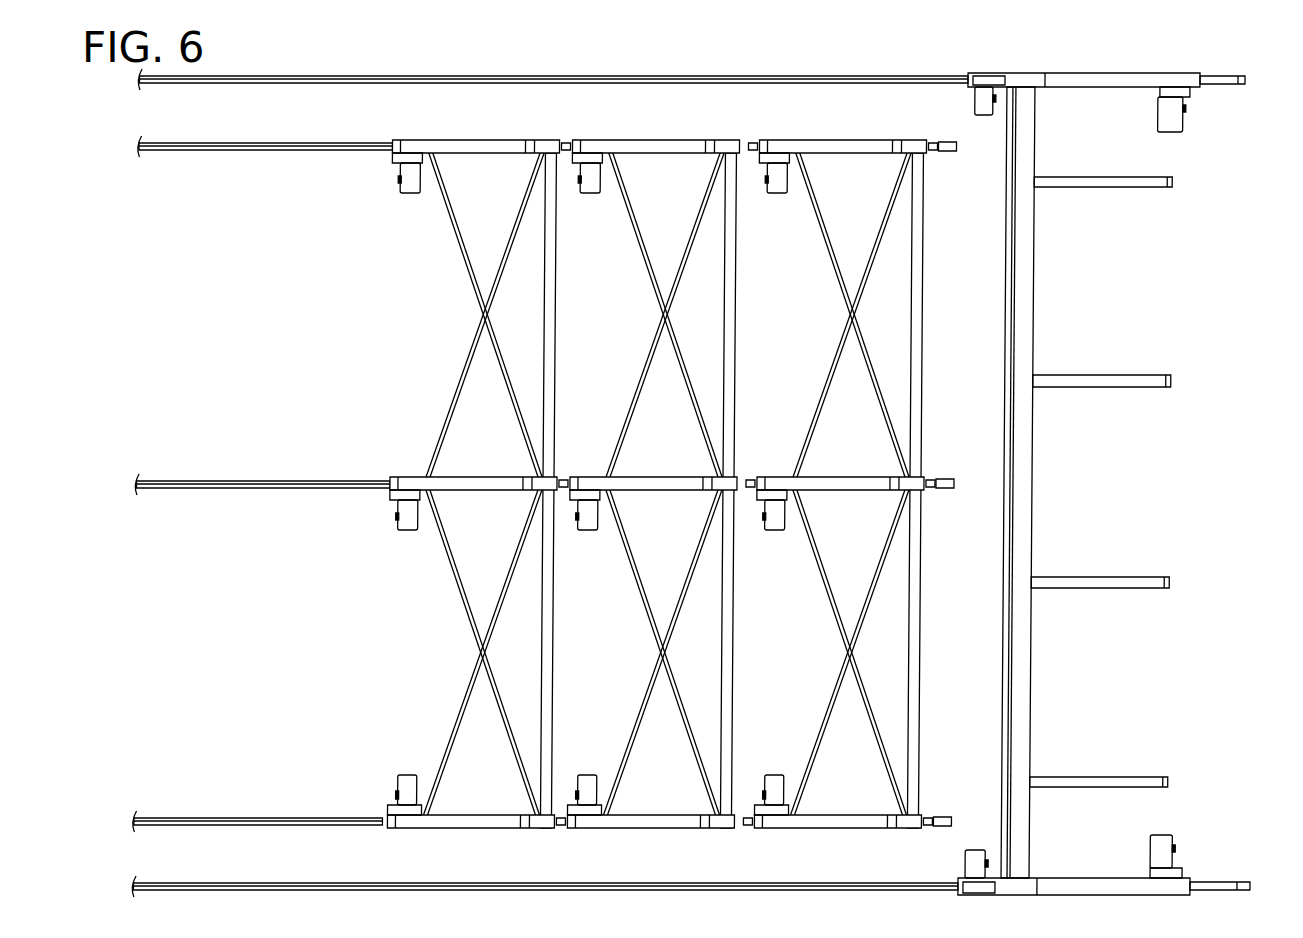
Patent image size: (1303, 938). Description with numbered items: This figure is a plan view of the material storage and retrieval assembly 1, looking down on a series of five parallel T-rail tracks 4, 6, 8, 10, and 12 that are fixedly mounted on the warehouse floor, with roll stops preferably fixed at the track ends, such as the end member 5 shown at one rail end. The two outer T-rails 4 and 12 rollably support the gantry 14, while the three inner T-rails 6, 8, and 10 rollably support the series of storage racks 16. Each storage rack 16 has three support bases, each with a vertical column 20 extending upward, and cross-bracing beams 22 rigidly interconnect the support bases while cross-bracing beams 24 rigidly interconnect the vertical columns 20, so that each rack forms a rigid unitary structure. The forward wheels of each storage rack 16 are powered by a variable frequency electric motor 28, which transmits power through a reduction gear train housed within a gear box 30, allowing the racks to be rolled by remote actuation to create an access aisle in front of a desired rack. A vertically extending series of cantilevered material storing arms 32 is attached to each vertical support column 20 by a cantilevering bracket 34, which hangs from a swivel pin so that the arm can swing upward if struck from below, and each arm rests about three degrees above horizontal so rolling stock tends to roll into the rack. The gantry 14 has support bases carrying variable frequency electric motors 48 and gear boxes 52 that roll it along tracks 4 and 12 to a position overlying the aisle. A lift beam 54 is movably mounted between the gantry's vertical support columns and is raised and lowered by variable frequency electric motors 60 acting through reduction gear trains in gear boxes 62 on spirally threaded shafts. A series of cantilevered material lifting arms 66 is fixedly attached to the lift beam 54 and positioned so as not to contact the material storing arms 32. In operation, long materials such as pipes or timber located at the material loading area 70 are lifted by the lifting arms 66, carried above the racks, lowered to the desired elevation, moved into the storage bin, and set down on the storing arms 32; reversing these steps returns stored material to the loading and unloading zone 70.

The material storage and retrieval assembly 1 is at (1075, 464).
The T-rail track 4 is at (206, 885).
The rail end member 5 is at (940, 818).
The T-rail track 6 is at (170, 817).
The T-rail track 8 is at (236, 490).
The T-rail track 10 is at (188, 151).
The T-rail track 12 is at (216, 84).
The gantry 14 is at (1089, 866).
The storage rack 16 is at (644, 461).
The vertical column 20 is at (547, 140).
The cross-bracing beam 22 is at (460, 265).
The cross-bracing beam 24 is at (547, 306).
The variable frequency electric motor 28 is at (407, 180).
The gear box 30 is at (390, 158).
The cantilevered material storing arm 32 is at (480, 147).
The cantilevering bracket 34 is at (524, 491).
The variable frequency electric motor 48 is at (1170, 123).
The gear box 52 is at (1183, 95).
The lift beam 54 is at (1021, 276).
The variable frequency electric motor 60 is at (976, 97).
The gear box 62 is at (982, 80).
The cantilevered material lifting arm 66 is at (1113, 386).
The material loading area 70 is at (1162, 529).